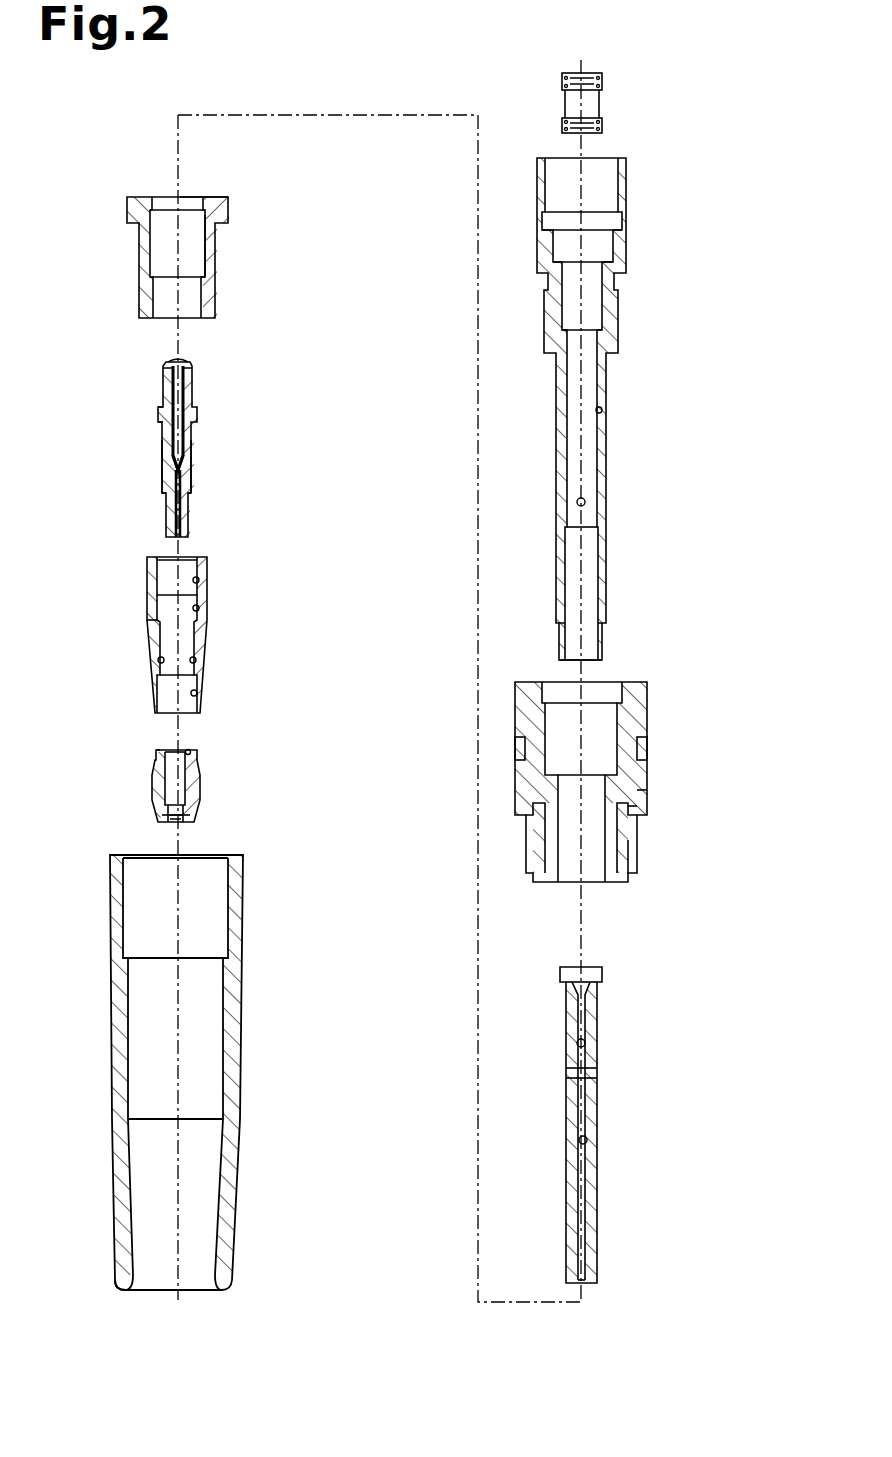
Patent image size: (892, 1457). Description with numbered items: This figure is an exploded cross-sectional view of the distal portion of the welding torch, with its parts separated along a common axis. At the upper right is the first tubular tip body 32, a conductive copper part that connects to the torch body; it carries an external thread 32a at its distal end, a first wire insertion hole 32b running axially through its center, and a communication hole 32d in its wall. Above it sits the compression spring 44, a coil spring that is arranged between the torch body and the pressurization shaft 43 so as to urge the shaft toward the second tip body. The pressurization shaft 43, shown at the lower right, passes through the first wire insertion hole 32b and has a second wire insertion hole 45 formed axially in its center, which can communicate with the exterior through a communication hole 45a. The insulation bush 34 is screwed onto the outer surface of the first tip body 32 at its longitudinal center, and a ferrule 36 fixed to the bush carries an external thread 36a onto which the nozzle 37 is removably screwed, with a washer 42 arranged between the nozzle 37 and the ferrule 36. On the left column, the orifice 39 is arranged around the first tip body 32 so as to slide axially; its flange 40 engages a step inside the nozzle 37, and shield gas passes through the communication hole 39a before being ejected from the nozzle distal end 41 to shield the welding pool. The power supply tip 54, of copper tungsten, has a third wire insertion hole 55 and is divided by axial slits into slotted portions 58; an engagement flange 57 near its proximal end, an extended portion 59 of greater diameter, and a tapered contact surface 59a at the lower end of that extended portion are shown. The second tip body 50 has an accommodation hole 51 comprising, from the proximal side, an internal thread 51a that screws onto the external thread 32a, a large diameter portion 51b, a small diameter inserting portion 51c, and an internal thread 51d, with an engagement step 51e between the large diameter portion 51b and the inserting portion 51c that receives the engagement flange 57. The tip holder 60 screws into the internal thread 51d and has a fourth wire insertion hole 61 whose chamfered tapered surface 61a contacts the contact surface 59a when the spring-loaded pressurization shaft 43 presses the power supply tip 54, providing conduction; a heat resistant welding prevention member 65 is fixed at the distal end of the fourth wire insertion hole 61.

The first tubular tip body 32 is at (650, 183).
The external thread 32a is at (606, 636).
The first wire insertion hole 32b is at (603, 410).
The communication hole 32d is at (600, 503).
The insulation bush 34 is at (676, 709).
The ferrule 36 is at (648, 786).
The external thread 36a is at (638, 861).
The nozzle 37 is at (274, 886).
The orifice 39 is at (252, 188).
The communication hole 39a is at (215, 260).
The flange 40 is at (228, 205).
The nozzle distal end 41 is at (130, 1278).
The washer 42 is at (648, 806).
The pressurization shaft 43 is at (649, 1004).
The compression spring 44 is at (604, 80).
The second wire insertion hole 45 is at (588, 1140).
The communication hole 45a is at (598, 1072).
The second tip body 50 is at (258, 560).
The accommodation hole 51 is at (158, 660).
The internal thread 51a is at (200, 580).
The large diameter portion 51b is at (200, 608).
The small diameter inserting portion 51c is at (197, 660).
The internal thread 51d is at (198, 693).
The engagement step 51e is at (154, 619).
The power supply tip 54 is at (259, 391).
The third wire insertion hole 55 is at (183, 362).
The engagement flange 57 is at (158, 414).
The slotted portions 58 is at (164, 470).
The extended portion 59 is at (187, 456).
The contact surface 59a is at (164, 492).
The tip holder 60 is at (259, 779).
The fourth wire insertion hole 61 is at (190, 752).
The tapered surface 61a is at (162, 750).
The welding prevention member 65 is at (182, 822).